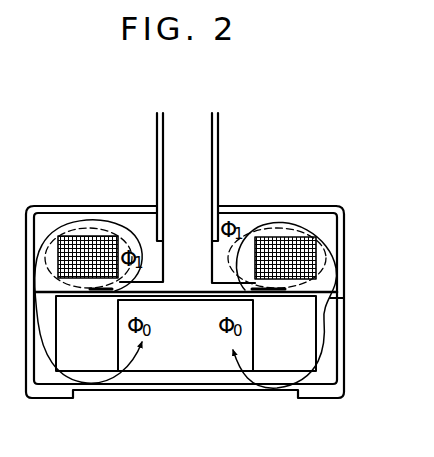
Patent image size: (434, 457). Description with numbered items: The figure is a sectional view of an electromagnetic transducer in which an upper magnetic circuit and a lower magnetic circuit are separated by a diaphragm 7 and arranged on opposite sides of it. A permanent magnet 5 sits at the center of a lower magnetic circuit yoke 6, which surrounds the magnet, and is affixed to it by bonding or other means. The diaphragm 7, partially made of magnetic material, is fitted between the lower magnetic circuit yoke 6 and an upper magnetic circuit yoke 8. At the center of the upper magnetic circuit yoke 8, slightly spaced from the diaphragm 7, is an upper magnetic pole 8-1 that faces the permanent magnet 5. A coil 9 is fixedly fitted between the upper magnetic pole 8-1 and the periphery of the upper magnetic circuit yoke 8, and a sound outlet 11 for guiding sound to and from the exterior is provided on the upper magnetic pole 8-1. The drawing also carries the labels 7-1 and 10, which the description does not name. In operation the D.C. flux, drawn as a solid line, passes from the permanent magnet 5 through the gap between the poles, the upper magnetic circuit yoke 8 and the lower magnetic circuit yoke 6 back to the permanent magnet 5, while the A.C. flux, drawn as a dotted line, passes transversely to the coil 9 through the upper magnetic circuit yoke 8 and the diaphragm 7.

The permanent magnet 5 is at (213, 358).
The lower magnetic circuit yoke 6 is at (252, 385).
The diaphragm 7 is at (187, 294).
The armature pivot 7-1 is at (308, 300).
The upper magnetic circuit yoke 8 is at (337, 272).
The upper magnetic pole 8-1 is at (153, 250).
The coil 9 is at (290, 237).
The bobbin 10 is at (252, 208).
The sound outlet 11 is at (213, 133).